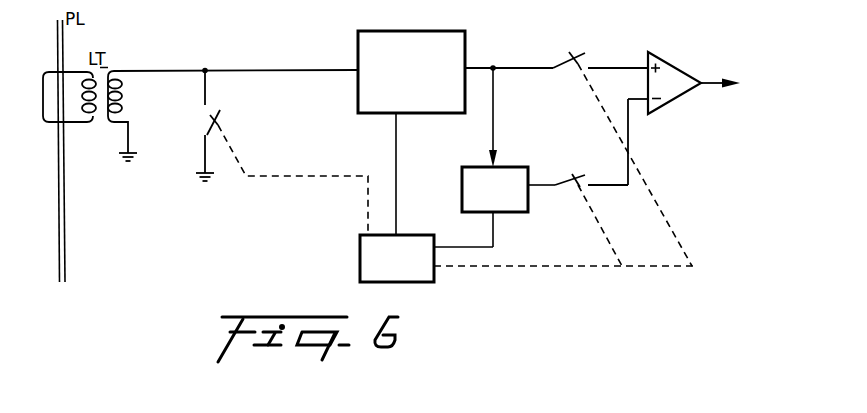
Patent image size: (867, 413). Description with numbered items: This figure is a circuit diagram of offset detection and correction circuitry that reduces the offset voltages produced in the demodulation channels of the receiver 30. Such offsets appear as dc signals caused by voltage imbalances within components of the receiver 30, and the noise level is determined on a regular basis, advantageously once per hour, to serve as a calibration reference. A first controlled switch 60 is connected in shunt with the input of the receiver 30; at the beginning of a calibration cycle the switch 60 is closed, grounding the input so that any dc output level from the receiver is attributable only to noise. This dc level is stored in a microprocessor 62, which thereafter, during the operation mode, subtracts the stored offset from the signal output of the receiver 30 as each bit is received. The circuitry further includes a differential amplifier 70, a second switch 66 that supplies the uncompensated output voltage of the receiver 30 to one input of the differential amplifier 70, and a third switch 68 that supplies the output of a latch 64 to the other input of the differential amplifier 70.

The receiver 30 is at (403, 40).
The first controlled switch 60 is at (213, 103).
The microprocessor 62 is at (362, 245).
The latch 64 is at (510, 175).
The second switch 66 is at (587, 62).
The third switch 68 is at (587, 181).
The differential amplifier 70 is at (675, 77).